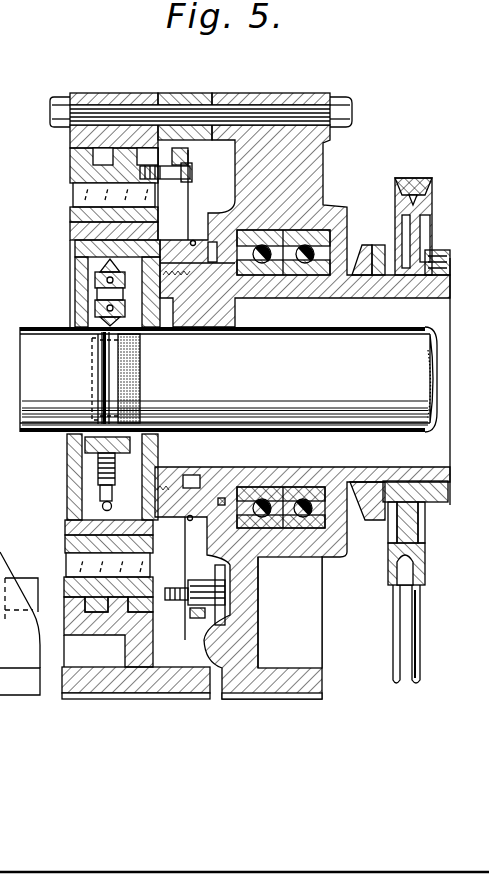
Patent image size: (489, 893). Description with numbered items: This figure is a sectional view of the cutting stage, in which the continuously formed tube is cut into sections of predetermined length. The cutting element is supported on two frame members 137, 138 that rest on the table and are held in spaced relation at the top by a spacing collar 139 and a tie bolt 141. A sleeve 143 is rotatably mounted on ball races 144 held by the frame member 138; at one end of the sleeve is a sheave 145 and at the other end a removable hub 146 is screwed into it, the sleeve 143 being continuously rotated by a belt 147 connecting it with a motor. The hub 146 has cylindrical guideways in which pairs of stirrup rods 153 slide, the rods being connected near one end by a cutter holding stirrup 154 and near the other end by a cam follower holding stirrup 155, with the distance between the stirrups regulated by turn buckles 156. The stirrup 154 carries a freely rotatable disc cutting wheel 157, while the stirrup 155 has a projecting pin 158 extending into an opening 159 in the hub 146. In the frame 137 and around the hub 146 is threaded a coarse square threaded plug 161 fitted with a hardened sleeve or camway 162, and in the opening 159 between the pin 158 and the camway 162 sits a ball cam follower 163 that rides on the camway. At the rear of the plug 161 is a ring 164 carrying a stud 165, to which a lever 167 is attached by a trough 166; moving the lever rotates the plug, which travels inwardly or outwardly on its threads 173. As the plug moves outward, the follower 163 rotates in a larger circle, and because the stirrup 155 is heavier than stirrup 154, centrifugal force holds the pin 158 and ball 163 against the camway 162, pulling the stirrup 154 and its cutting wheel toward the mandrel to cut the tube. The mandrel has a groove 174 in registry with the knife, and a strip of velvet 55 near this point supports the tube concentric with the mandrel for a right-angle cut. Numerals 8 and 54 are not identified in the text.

The shaft 8 is at (318, 327).
The tubular shaft bore 54 is at (367, 365).
The strip of velvet 55 is at (140, 375).
The frame member 137 is at (107, 93).
The frame member 138 is at (288, 93).
The spacing collar 139 is at (195, 93).
The tie bolt 141 is at (311, 110).
The sleeve 143 is at (418, 290).
The ball races 144 is at (300, 265).
The sheave 145 is at (397, 203).
The removable hub 146 is at (75, 247).
The belt 147 is at (402, 625).
The stirrup rods 153 is at (95, 398).
The cutter holding stirrup 154 is at (95, 302).
The cam follower holding stirrup 155 is at (78, 449).
The turn buckles 156 is at (95, 350).
The disc cutting wheel 157 is at (95, 318).
The projecting pin 158 is at (95, 488).
The opening 159 is at (120, 497).
The coarse square threaded plug 161 is at (70, 166).
The camway 162 is at (70, 230).
The ball cam follower 163 is at (95, 505).
The ring 164 is at (190, 156).
The stud 165 is at (247, 587).
The trough 166 is at (195, 618).
The lever 167 is at (247, 627).
The threads 173 is at (70, 156).
The groove 174 is at (108, 352).